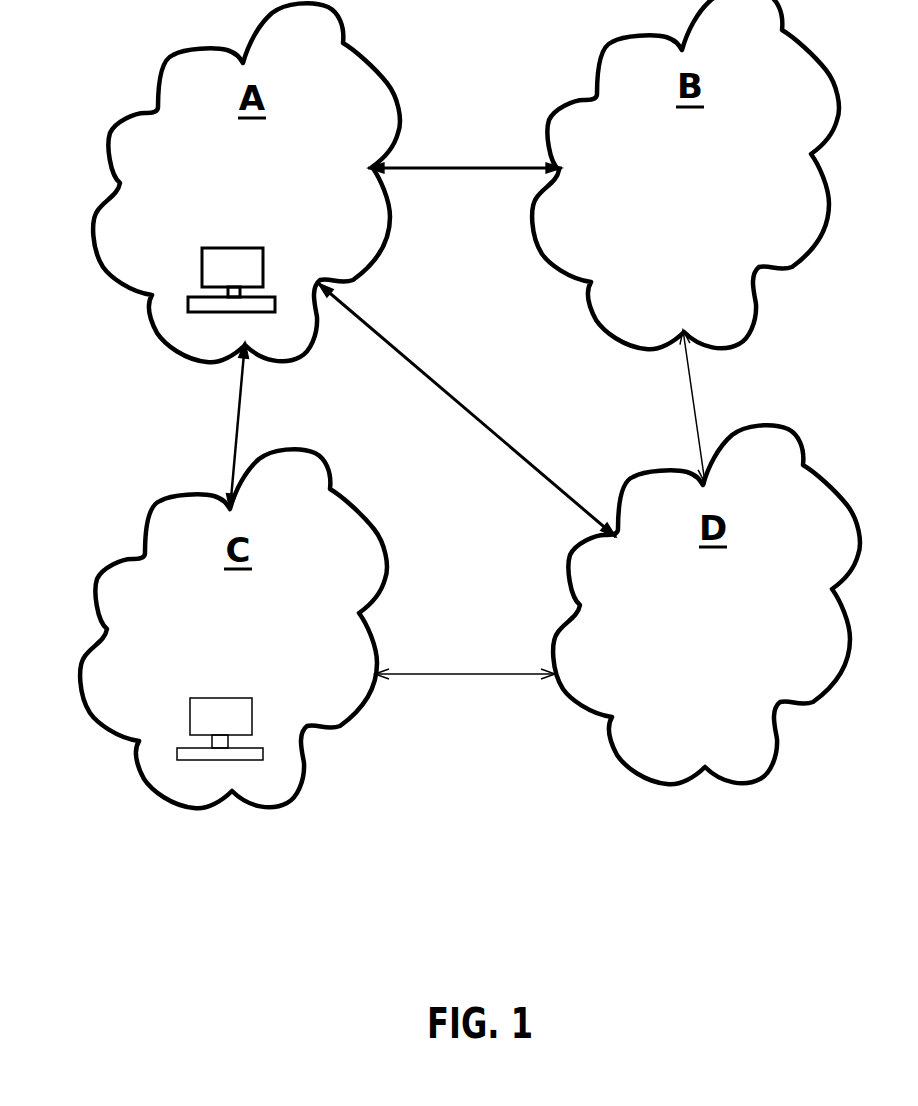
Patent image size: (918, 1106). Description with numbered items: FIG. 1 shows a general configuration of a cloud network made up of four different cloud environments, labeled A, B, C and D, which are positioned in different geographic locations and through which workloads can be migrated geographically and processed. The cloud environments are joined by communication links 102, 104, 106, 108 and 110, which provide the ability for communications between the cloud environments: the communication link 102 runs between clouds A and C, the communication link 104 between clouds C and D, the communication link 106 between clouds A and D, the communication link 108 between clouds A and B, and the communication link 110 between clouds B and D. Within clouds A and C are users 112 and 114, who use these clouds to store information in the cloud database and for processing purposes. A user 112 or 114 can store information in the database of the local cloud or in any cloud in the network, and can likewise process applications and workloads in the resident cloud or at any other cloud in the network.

The communication link 102 is at (236, 407).
The communication link 104 is at (494, 675).
The communication link 106 is at (495, 433).
The communication link 108 is at (493, 163).
The communication link 110 is at (690, 381).
The user 112 is at (202, 273).
The user 114 is at (190, 723).